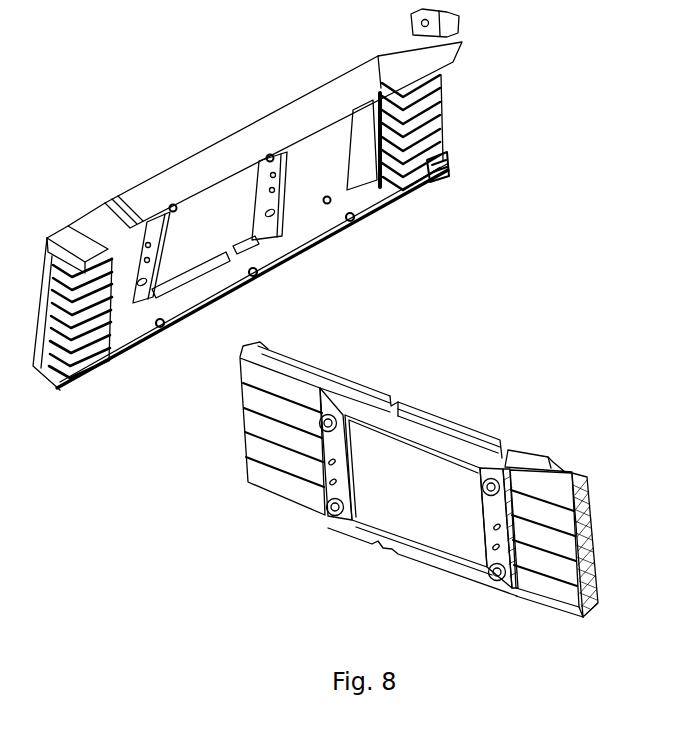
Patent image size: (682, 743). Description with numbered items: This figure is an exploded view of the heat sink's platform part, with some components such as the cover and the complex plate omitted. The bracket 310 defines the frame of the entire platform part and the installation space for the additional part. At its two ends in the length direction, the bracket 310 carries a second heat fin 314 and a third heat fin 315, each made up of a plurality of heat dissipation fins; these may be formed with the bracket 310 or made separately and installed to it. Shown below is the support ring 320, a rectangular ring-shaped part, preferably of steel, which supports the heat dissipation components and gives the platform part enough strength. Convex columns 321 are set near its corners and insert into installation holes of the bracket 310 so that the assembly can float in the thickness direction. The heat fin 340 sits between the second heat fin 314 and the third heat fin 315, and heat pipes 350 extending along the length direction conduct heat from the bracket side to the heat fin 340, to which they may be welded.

The bracket 310 is at (232, 157).
The second heat fin 314 is at (98, 376).
The third heat fin 315 is at (437, 184).
The support ring 320 is at (407, 440).
The convex column 321 is at (326, 420).
The heat fin 340 is at (478, 440).
The heat pipe 350 is at (532, 510).